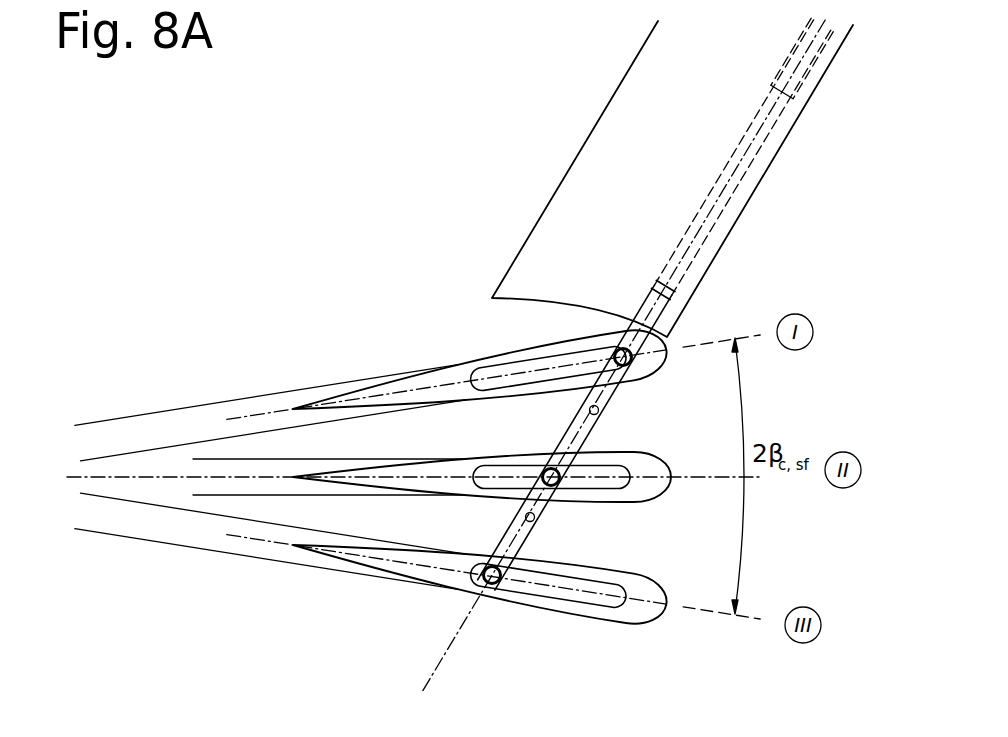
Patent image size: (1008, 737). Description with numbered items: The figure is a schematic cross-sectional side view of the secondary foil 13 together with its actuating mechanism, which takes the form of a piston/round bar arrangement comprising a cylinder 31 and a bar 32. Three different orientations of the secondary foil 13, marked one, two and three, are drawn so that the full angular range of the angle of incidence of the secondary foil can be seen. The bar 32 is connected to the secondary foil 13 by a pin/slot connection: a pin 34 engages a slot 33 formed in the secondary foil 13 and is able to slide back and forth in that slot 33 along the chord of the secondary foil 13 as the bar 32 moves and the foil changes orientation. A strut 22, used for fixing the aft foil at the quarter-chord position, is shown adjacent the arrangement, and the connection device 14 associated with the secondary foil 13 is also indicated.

The secondary foil 13 is at (443, 363).
The connection device 14 is at (138, 433).
The strut for fixing aft foil at c/4 22 is at (555, 190).
The cylinder 31 is at (793, 82).
The bar 32 is at (723, 188).
The slot in secondary foil 33 is at (590, 597).
The pin 34 is at (489, 586).